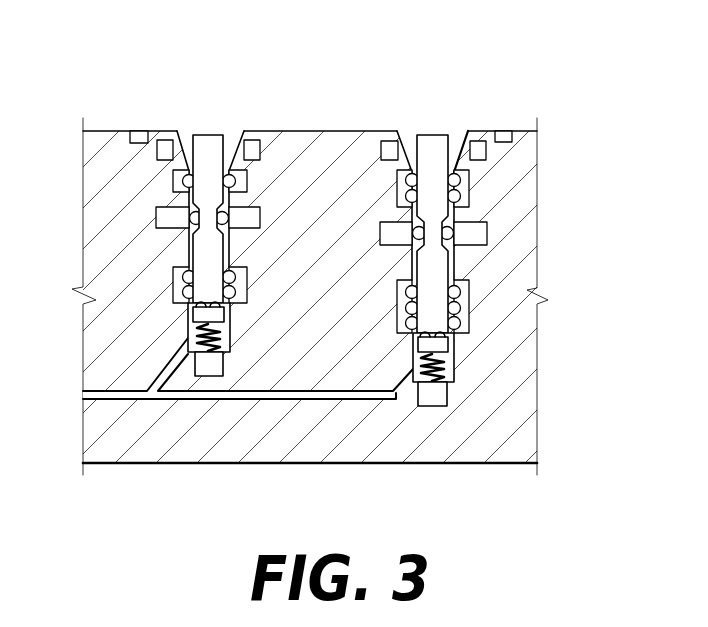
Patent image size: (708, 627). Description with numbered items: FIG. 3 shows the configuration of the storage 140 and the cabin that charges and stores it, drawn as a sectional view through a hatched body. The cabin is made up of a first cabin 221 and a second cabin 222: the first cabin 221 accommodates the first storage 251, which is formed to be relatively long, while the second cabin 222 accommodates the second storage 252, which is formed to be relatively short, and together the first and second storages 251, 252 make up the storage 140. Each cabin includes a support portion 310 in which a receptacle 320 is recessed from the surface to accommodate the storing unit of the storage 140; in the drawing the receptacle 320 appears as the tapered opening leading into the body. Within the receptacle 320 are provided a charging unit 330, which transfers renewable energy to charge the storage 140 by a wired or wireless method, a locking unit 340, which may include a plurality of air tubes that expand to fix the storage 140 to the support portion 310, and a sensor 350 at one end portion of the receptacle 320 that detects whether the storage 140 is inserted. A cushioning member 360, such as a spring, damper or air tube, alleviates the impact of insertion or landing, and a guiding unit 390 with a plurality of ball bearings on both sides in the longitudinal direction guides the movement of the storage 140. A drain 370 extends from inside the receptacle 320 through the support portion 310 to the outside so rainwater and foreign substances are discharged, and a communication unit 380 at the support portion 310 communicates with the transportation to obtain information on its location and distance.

The storage 140 is at (430, 70).
The first cabin 221 is at (617, 72).
The second cabin 222 is at (100, 221).
The first storage 251 is at (428, 132).
The second storage 252 is at (214, 132).
The support portion 310 is at (530, 193).
The receptacle 320 is at (455, 143).
The charging unit 330 is at (450, 347).
The locking unit 340 is at (478, 232).
The sensor 350 is at (447, 392).
The cushioning member 360 is at (486, 150).
The drain 370 is at (397, 393).
The communication unit 380 is at (502, 132).
The guiding unit 390 is at (470, 284).